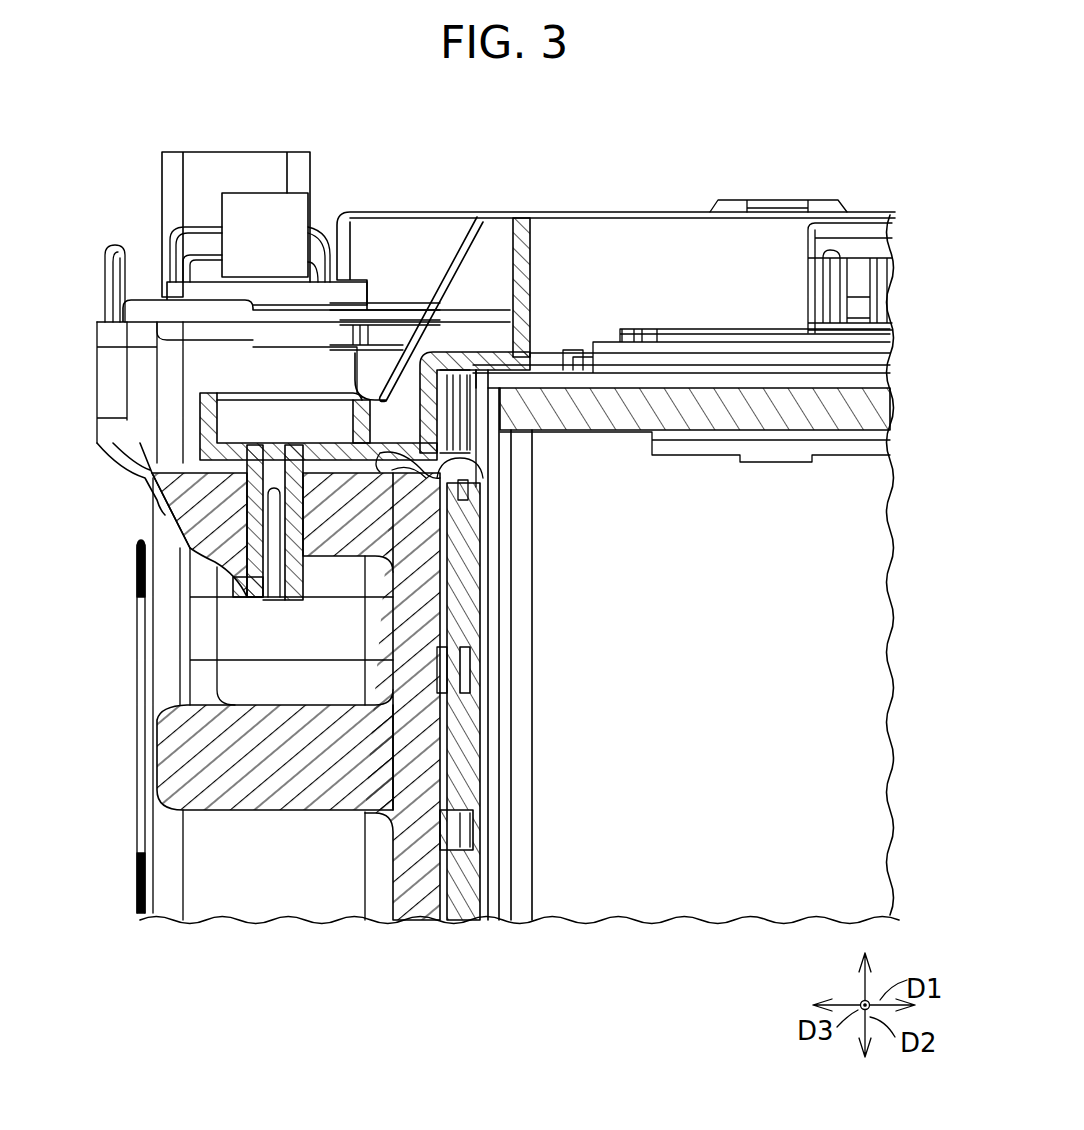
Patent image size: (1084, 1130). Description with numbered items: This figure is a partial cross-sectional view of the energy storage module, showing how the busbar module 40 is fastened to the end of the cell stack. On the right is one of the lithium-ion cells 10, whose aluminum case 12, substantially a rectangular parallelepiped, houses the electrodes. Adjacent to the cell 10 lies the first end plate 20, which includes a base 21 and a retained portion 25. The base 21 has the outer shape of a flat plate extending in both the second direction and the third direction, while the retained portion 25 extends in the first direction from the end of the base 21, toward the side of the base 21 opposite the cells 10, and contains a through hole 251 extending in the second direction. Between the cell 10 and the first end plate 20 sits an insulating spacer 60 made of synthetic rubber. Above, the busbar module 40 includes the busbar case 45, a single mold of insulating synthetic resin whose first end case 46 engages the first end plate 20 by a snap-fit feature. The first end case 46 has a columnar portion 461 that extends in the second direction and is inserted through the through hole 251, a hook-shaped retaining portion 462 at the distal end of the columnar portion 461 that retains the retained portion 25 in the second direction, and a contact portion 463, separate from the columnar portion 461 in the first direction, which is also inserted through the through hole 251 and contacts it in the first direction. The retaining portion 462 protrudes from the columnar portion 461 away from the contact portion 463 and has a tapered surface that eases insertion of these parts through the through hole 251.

The cell 10 is at (866, 607).
The case 12 is at (878, 411).
The busbar module 40 is at (598, 191).
The busbar case 45 is at (475, 314).
The first end case 46 is at (437, 345).
The first end plate 20 is at (288, 748).
The base 21 is at (421, 655).
The retained portion 25 is at (347, 533).
The through hole 251 is at (300, 508).
The columnar portion 461 is at (250, 525).
The retaining portion 462 is at (233, 582).
The contact portion 463 is at (290, 557).
The spacer 60 is at (463, 908).